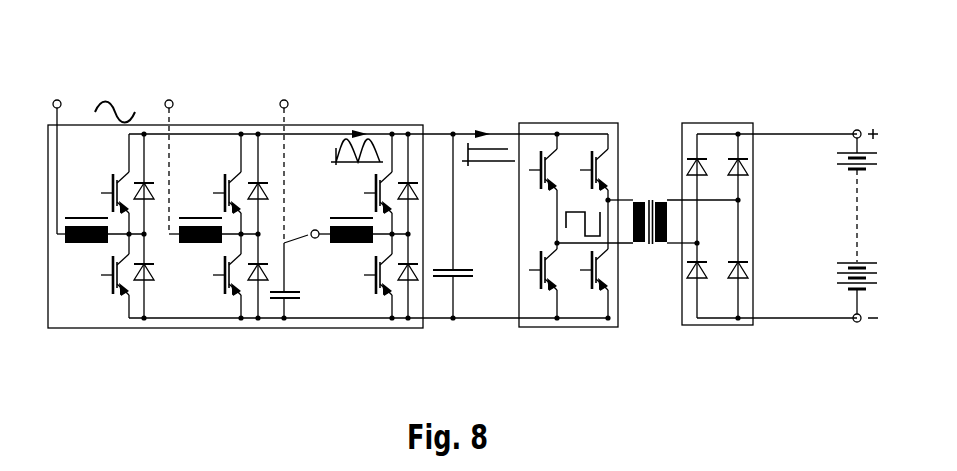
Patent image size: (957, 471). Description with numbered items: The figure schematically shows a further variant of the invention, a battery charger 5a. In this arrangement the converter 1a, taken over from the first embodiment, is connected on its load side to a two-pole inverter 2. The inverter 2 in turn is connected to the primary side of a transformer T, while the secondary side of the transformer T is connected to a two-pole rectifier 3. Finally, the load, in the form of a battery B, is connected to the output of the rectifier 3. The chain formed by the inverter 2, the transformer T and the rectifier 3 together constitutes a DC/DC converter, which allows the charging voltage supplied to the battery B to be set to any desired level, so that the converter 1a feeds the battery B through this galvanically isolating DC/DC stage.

The battery charger 5a is at (350, 55).
The converter 1a is at (265, 128).
The two-pole inverter 2 is at (575, 130).
The two-pole rectifier 3 is at (718, 130).
The transformer T is at (685, 203).
The battery B is at (868, 225).